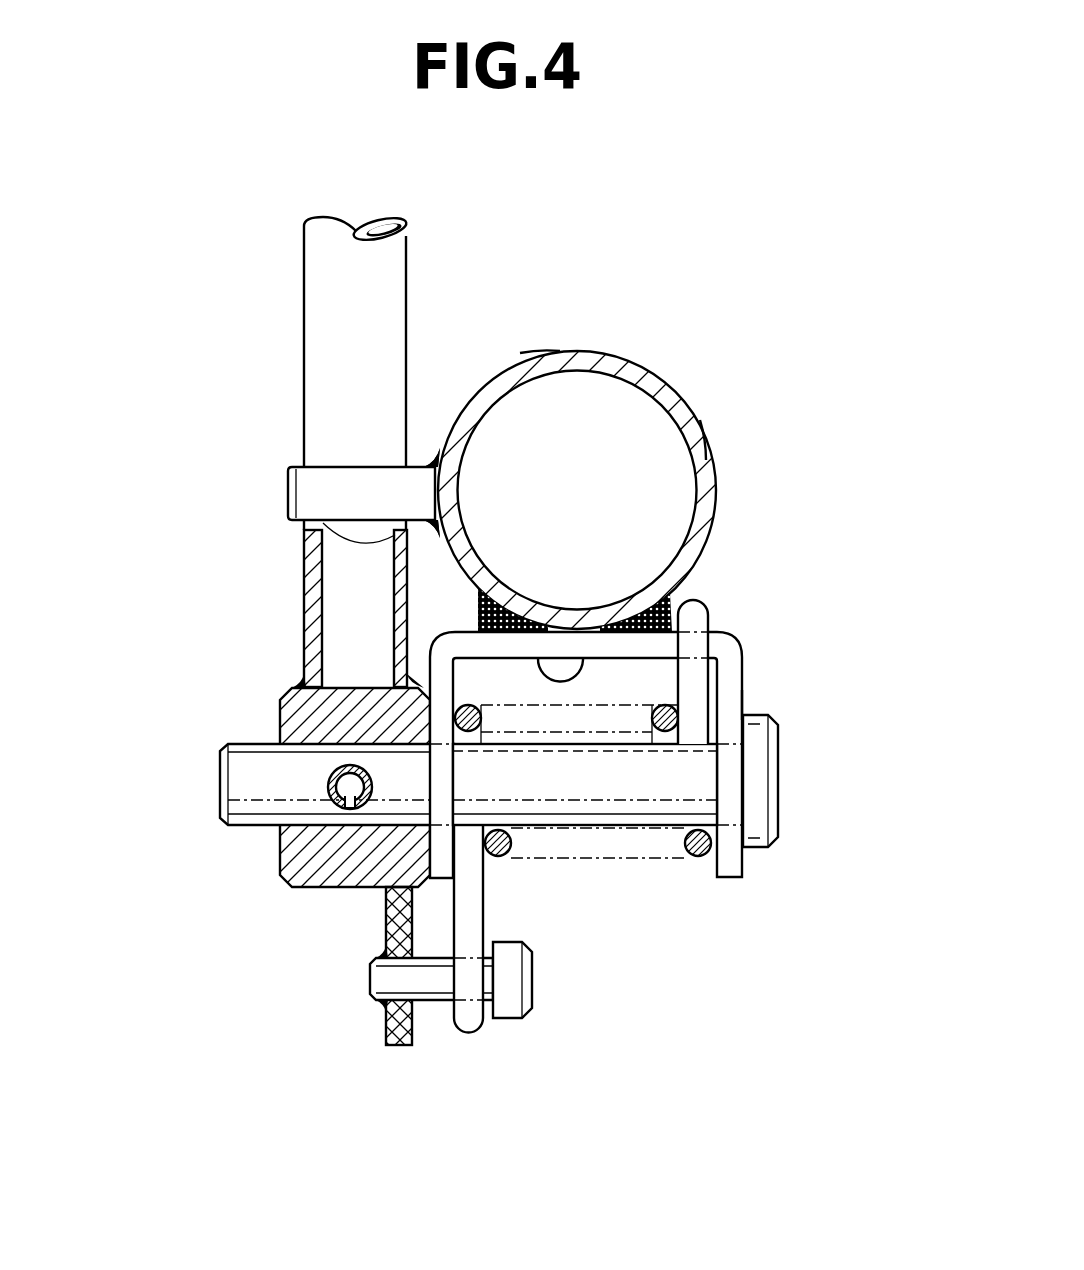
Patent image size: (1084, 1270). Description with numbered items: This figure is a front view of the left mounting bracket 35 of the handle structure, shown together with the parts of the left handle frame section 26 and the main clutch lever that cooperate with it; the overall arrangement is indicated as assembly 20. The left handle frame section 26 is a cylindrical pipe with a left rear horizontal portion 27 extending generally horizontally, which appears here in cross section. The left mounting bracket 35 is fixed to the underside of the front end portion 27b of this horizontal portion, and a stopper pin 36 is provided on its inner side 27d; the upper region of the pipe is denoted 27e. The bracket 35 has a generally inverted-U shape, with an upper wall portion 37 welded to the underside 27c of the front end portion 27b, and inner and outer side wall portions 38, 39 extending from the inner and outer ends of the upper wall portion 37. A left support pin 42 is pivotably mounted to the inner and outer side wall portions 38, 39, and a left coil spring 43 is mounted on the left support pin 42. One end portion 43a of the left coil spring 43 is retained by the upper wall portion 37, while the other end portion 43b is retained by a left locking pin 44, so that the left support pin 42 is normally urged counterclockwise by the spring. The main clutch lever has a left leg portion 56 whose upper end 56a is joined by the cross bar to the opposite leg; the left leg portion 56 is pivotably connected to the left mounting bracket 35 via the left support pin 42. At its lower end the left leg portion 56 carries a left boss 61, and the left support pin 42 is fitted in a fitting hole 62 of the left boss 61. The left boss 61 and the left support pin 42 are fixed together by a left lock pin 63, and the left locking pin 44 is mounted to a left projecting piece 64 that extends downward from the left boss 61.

The mounting assembly 20 is at (709, 86).
The left handle frame section 26 is at (602, 312).
The left rear horizontal portion 27 is at (665, 372).
The front end portion 27b is at (697, 443).
The underside 27c is at (583, 640).
The inner side 27d is at (417, 492).
The upper portion of ring member 27e is at (537, 350).
The left mounting bracket 35 is at (758, 711).
The stopper pin 36 is at (290, 497).
The upper wall portion 37 is at (660, 632).
The inner side wall portion 38 is at (425, 788).
The outer side wall portion 39 is at (728, 777).
The left support pin 42 is at (612, 790).
The left coil spring 43 is at (700, 857).
The one end portion 43a is at (700, 645).
The another end portion 43b is at (468, 988).
The left locking pin 44 is at (388, 1033).
The left leg portion 56 is at (320, 287).
The upper end 56a is at (310, 662).
The left boss 61 is at (290, 722).
The fitting hole 62 is at (330, 752).
The left lock pin 63 is at (328, 790).
The left projecting piece 64 is at (390, 930).